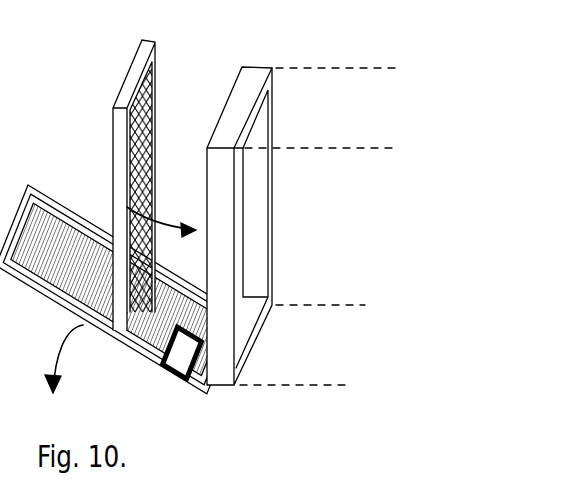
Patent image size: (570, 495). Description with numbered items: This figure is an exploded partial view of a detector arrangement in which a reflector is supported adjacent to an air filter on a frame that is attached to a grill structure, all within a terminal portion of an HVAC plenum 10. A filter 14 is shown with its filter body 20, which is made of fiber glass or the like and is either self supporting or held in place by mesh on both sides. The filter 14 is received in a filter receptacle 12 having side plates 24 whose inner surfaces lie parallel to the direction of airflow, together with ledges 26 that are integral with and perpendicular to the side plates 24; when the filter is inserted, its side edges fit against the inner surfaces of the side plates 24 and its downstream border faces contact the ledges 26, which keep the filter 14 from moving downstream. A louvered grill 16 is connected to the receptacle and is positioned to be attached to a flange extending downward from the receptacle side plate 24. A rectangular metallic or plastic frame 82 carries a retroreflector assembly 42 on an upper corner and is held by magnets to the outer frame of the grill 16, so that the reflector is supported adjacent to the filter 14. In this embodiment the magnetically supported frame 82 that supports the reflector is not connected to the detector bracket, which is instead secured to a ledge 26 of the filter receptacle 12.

The HVAC plenum 10 is at (272, 383).
The filter receptacle 12 is at (272, 67).
The filter 14 is at (150, 127).
The grill 16 is at (18, 293).
The filter body 20 is at (150, 82).
The side plates 24 is at (227, 348).
The ledges 26 is at (240, 178).
The retroreflector assembly 42 is at (180, 383).
The frame 82 is at (157, 358).